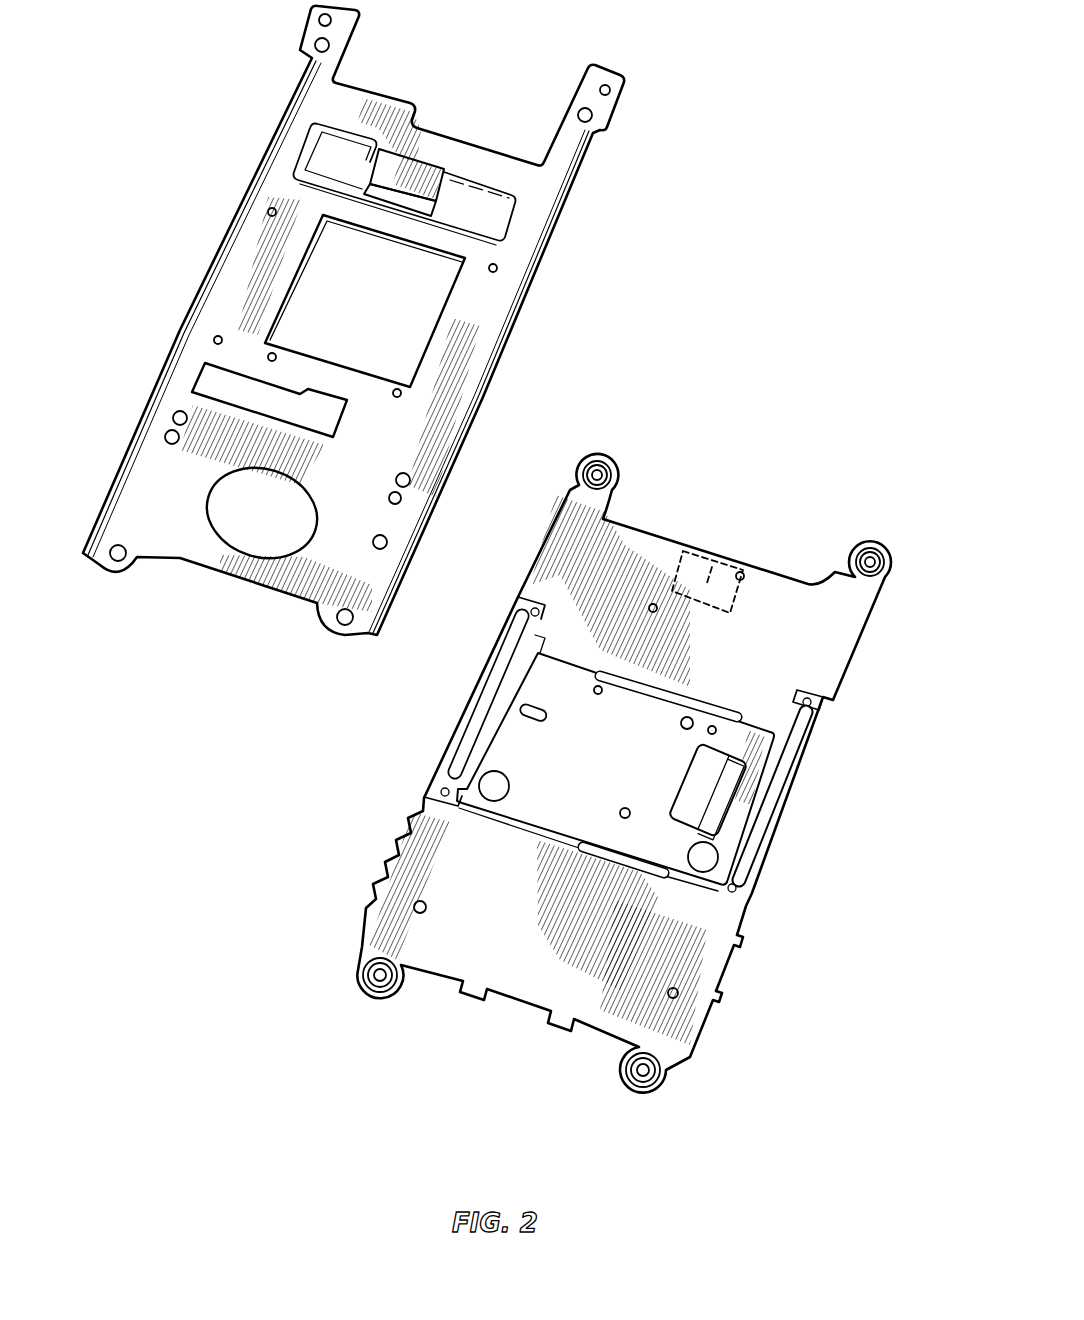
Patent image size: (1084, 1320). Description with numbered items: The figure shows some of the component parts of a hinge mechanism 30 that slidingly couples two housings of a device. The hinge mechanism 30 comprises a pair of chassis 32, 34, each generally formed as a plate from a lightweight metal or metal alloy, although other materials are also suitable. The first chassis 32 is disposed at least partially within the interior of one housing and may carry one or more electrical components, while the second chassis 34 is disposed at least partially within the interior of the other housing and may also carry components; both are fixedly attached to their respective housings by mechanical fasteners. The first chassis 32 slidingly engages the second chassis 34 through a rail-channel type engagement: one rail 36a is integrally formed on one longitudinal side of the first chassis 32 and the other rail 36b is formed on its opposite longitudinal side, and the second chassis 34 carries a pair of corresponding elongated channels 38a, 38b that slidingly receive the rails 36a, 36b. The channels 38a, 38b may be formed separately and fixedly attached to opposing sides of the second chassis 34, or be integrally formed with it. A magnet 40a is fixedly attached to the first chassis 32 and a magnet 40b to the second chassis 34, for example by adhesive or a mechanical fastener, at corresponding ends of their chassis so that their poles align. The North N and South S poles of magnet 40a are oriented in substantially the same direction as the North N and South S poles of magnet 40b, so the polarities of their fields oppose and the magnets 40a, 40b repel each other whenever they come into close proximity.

The hinge mechanism 30 is at (500, 549).
The first chassis 32 is at (353, 320).
The second chassis 34 is at (777, 607).
The rail 36a is at (177, 338).
The rail 36b is at (508, 337).
The channel 38a is at (487, 715).
The channel 38b is at (755, 813).
The magnet 40a is at (400, 177).
The magnet 40b is at (718, 552).
The South pole S is at (362, 192).
The North pole N is at (433, 203).